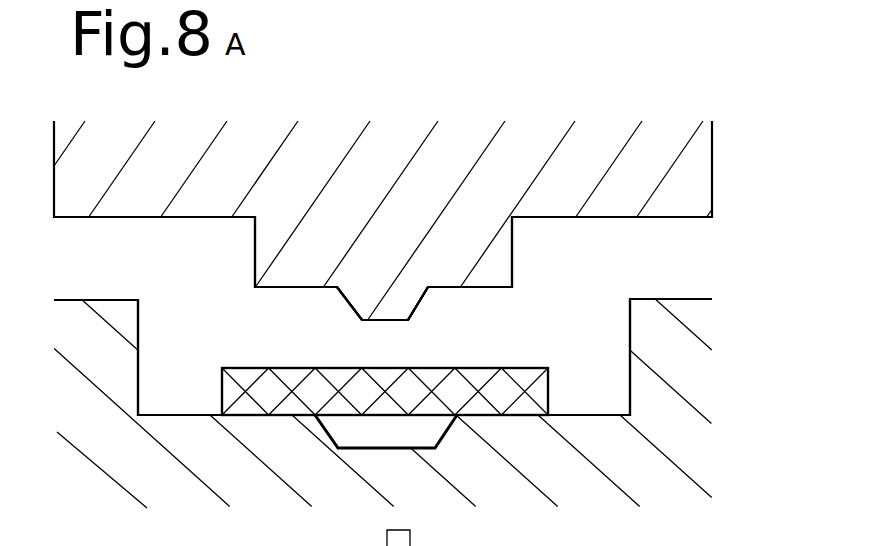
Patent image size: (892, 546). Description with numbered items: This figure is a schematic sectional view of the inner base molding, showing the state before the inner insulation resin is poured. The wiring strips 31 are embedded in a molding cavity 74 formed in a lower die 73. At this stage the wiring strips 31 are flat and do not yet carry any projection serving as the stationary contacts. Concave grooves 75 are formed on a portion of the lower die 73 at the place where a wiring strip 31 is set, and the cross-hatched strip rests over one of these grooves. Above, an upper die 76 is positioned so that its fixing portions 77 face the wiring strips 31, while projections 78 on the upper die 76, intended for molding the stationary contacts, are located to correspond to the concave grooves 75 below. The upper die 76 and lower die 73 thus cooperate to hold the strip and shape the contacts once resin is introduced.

The upper die 76 is at (700, 176).
The fixing portions 77 is at (490, 280).
The projections 78 is at (355, 297).
The lower die 73 is at (698, 322).
The molding cavity 74 is at (212, 311).
The wiring strips 31 is at (528, 377).
The concave grooves 75 is at (390, 438).